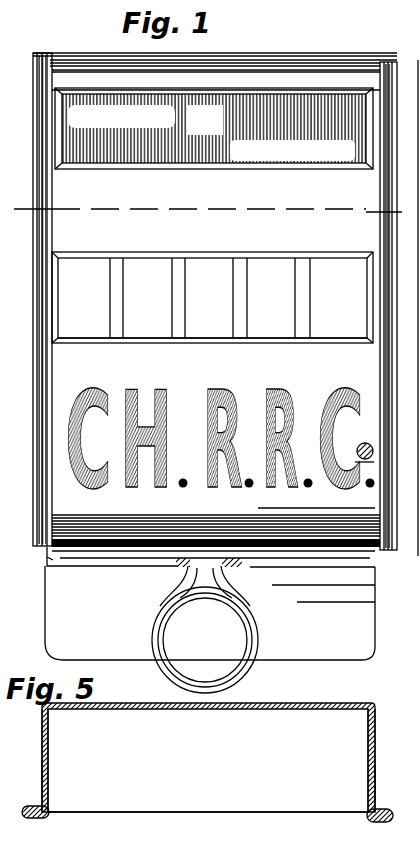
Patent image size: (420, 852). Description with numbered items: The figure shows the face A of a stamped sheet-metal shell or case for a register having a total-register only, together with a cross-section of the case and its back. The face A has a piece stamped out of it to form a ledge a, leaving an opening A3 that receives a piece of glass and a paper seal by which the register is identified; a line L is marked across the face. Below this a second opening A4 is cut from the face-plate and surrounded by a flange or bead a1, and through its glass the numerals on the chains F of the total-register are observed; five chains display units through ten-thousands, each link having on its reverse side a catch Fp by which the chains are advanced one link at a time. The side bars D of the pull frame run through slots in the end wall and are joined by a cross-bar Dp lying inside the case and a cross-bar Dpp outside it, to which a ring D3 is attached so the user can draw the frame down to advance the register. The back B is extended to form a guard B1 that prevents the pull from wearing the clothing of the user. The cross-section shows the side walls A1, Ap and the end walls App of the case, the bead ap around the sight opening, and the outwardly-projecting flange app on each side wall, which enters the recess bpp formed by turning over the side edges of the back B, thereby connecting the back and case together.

In FIG. 1, the face of shell or case A is at (225, 304).
In FIG. 5, the face of shell or case A is at (208, 747).
In FIG. 1, the ledge a is at (216, 132).
In FIG. 1, the opening A3 is at (214, 141).
In FIG. 1, the section line L is at (208, 212).
In FIG. 1, the flange or bead a1 is at (212, 302).
In FIG. 1, the chains F is at (326, 272).
In FIG. 1, the catch Fp is at (135, 338).
In FIG. 1, the second opening A4 is at (212, 353).
In FIG. 1, the side bars D is at (378, 566).
In FIG. 1, the cross-bar Dp is at (46, 563).
In FIG. 1, the cross-bar Dpp is at (215, 576).
In FIG. 1, the guard B1 is at (210, 613).
In FIG. 1, the ring D3 is at (205, 629).
In FIG. 5, the side wall A1 is at (32, 760).
In FIG. 5, the flange or bead ap is at (31, 780).
In FIG. 5, the side wall Ap is at (392, 760).
In FIG. 5, the outwardly-projecting flange app is at (389, 782).
In FIG. 5, the end wall App is at (208, 760).
In FIG. 5, the recess bpp is at (388, 801).
In FIG. 5, the back B is at (208, 831).